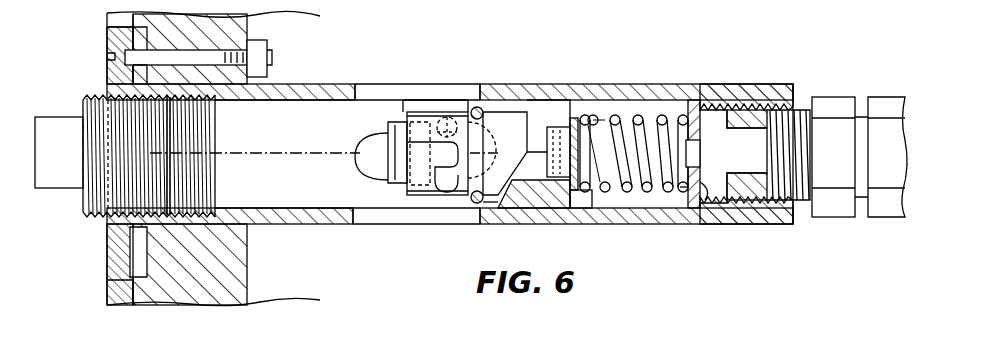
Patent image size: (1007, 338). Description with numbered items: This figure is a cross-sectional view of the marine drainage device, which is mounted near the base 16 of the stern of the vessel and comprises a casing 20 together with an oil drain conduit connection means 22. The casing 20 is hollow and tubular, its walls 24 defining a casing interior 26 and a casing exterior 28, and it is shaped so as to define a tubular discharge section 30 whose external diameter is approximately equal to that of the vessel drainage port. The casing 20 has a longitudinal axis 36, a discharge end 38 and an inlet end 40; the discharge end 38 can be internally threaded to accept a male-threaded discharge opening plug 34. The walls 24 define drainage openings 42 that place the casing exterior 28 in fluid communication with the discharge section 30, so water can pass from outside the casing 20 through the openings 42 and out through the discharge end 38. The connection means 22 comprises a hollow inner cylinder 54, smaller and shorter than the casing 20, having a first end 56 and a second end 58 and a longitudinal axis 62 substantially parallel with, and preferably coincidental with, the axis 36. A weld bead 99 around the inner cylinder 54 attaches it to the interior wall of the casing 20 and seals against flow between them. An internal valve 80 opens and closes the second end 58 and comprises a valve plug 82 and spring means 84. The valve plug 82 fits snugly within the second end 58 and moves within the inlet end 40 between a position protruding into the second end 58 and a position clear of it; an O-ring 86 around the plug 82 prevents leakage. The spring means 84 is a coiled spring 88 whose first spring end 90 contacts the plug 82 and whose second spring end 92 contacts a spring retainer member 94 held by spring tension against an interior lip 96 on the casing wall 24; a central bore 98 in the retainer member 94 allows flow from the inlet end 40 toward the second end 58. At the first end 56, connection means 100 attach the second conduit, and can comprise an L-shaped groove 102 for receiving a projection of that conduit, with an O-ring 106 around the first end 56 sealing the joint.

The base 16 is at (247, 263).
The casing 20 is at (450, 143).
The oil drain conduit connection means 22 is at (813, 91).
The walls 24 is at (326, 224).
The casing interior 26 is at (352, 110).
The casing exterior 28 is at (277, 284).
The tubular discharge section 30 is at (303, 57).
The discharge opening plug 34 is at (53, 188).
The longitudinal axis 36 is at (288, 153).
The discharge end 38 is at (182, 183).
The inlet end 40 is at (748, 93).
The drainage openings 42 is at (467, 57).
The inner cylinder 54 is at (496, 199).
The first end 56 is at (403, 100).
The second end 58 is at (563, 107).
The longitudinal axis 62 is at (512, 157).
The internal valve 80 is at (626, 102).
The valve plug 82 is at (573, 122).
The spring means 84 is at (658, 101).
The O-ring 86 is at (563, 178).
The coiled spring 88 is at (642, 196).
The first spring end 90 is at (583, 190).
The second spring end 92 is at (692, 110).
The spring retainer member 94 is at (705, 195).
The interior lip 96 is at (688, 190).
The central bore 98 is at (700, 155).
The weld bead 99 is at (547, 100).
The connection means 100 is at (400, 198).
The L-shaped groove 102 is at (447, 190).
The O-ring 106 is at (478, 108).